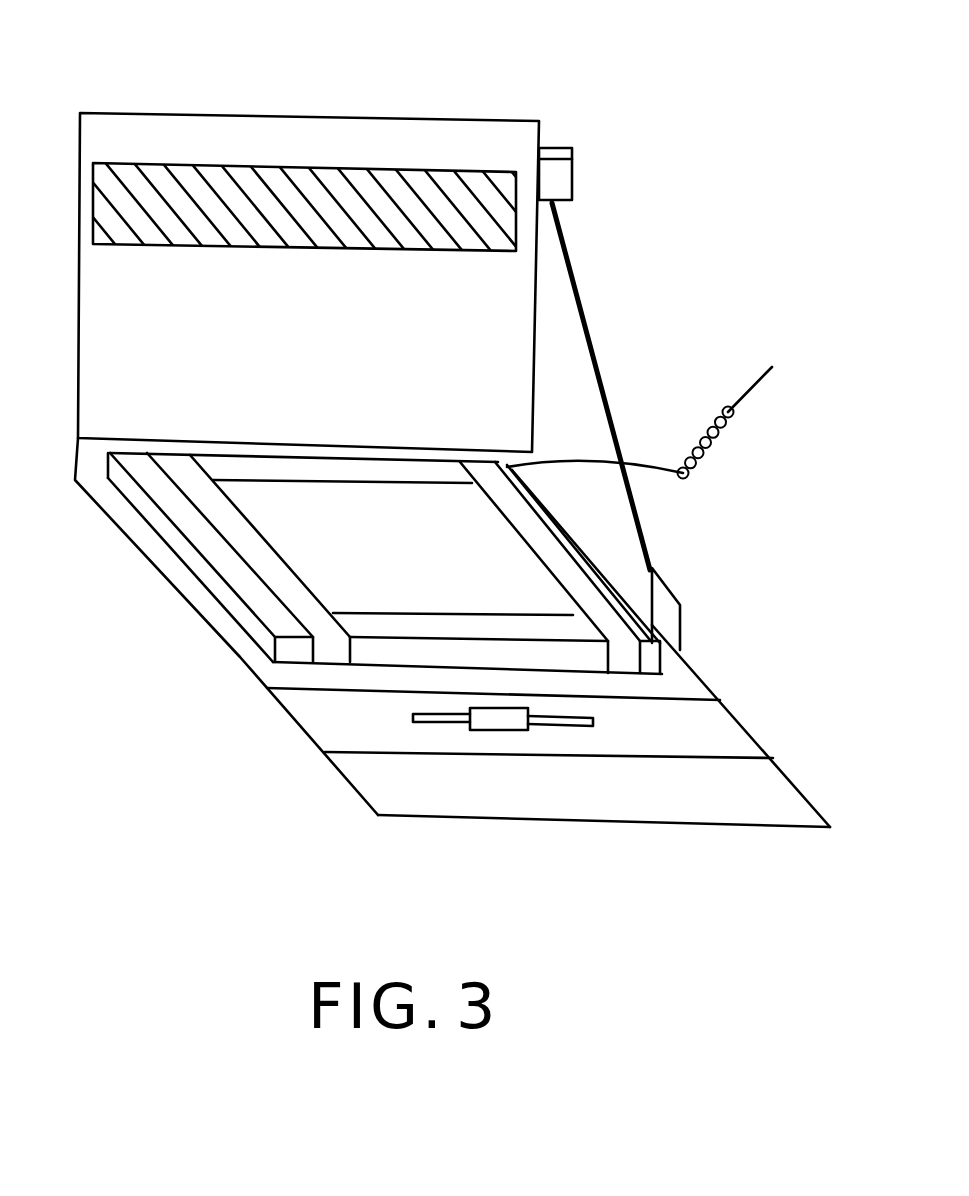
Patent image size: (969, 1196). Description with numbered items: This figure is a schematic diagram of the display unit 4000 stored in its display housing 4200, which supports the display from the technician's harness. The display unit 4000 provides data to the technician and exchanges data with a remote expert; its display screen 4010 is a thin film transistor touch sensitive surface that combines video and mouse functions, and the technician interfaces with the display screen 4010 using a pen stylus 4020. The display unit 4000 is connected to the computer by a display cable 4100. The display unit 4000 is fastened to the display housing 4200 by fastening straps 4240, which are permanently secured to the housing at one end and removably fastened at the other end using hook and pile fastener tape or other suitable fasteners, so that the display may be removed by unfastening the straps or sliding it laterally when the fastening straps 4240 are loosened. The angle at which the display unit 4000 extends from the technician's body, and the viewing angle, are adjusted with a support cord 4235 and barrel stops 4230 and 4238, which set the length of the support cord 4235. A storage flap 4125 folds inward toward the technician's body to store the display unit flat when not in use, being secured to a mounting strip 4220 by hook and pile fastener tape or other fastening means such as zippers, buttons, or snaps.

The display housing 4200 is at (408, 117).
The mounting strip 4220 is at (238, 246).
The barrel stop 4230 is at (572, 168).
The support cord 4235 is at (590, 317).
The display cable 4100 is at (712, 456).
The display unit 4000 is at (183, 548).
The display screen 4010 is at (372, 486).
The fastening straps 4240 is at (557, 558).
The barrel stop 4238 is at (680, 613).
The storage flap 4125 is at (337, 780).
The pen stylus 4020 is at (593, 720).